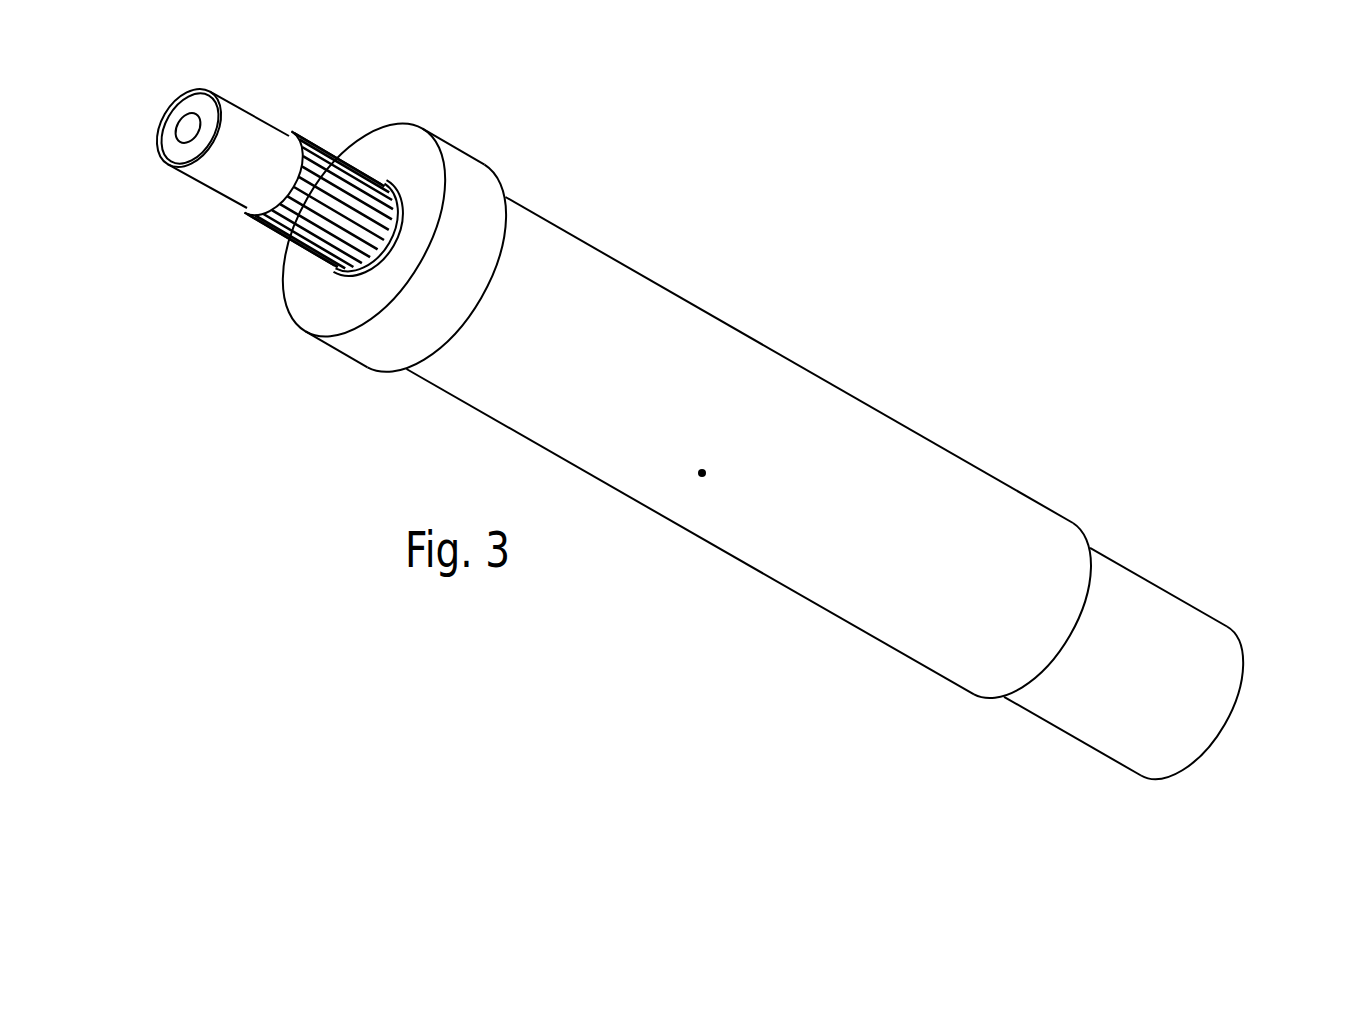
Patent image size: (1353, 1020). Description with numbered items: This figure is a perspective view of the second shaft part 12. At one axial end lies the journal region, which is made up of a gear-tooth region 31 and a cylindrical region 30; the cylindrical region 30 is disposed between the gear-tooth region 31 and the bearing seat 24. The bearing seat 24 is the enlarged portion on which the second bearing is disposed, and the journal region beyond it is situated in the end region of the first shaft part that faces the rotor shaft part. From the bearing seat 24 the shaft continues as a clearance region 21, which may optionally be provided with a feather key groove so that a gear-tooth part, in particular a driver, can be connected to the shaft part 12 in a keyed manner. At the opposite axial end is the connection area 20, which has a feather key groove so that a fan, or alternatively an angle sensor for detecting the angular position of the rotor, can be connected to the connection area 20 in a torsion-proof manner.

The second shaft part 12 is at (702, 473).
The connection area 20 is at (1172, 586).
The clearance region 21 is at (948, 440).
The bearing seat 24 is at (344, 364).
The cylindrical region 30 is at (201, 198).
The gear-tooth region 31 is at (277, 249).